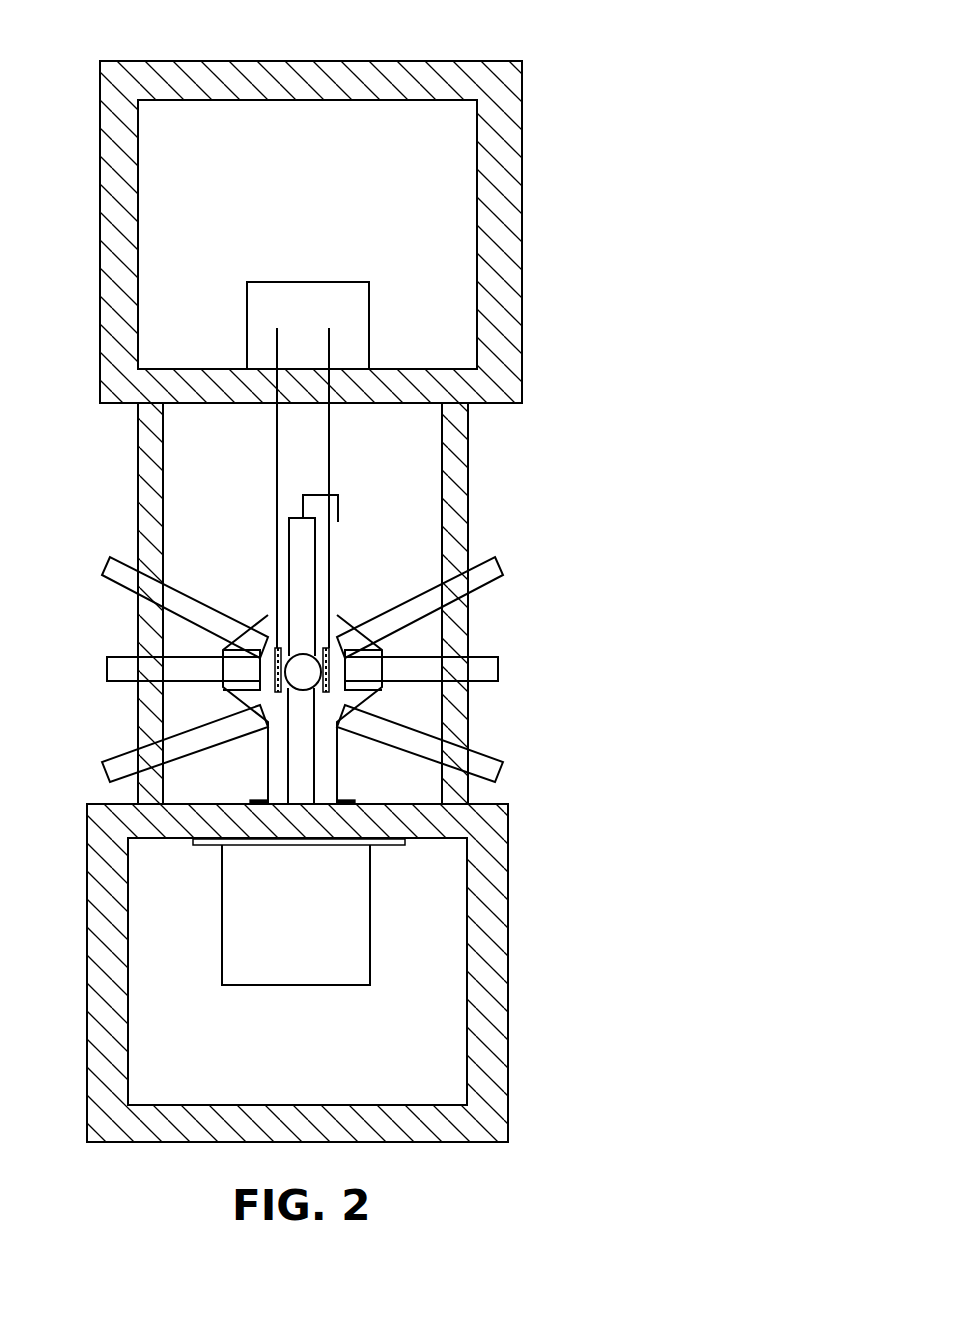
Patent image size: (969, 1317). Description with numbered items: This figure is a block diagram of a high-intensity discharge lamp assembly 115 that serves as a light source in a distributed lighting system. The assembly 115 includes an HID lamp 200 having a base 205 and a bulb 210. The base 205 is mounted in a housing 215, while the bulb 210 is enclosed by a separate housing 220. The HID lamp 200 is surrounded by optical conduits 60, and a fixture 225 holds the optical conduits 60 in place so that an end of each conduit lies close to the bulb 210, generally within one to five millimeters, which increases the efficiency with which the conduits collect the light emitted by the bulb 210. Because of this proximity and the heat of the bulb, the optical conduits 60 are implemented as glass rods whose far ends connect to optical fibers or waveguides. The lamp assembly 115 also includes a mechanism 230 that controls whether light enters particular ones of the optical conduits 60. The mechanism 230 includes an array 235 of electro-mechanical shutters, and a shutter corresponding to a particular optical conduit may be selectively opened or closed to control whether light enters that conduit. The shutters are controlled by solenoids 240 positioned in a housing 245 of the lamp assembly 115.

The HID lamp assembly 115 is at (550, 60).
The housing 245 is at (512, 226).
The mechanism 230 is at (300, 405).
The solenoids 240 is at (300, 297).
The housing 220 is at (460, 462).
The HID lamp 200 is at (285, 531).
The bulb 210 is at (303, 565).
The array of electro-mechanical shutters 235 is at (328, 650).
The fixture 225 is at (270, 755).
The optical conduits 60 is at (103, 568).
The housing 215 is at (490, 942).
The base 205 is at (332, 925).